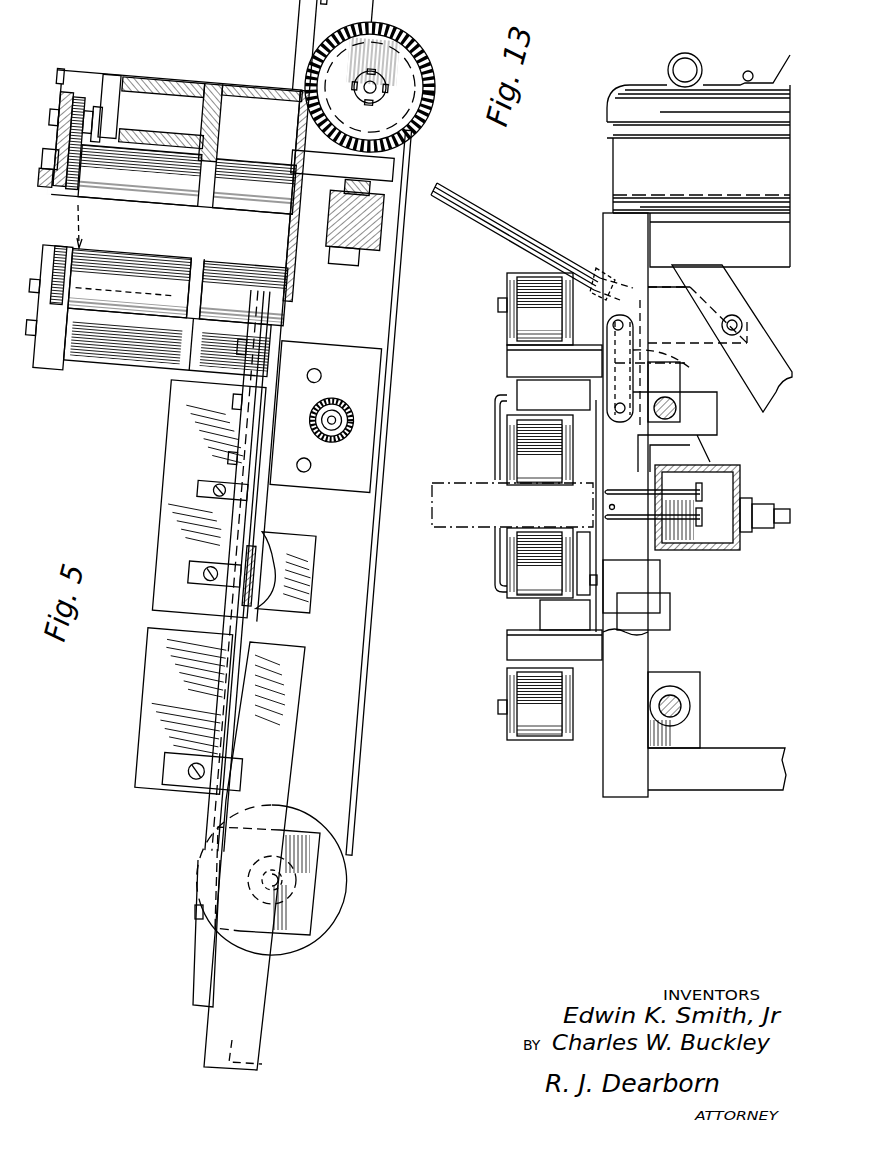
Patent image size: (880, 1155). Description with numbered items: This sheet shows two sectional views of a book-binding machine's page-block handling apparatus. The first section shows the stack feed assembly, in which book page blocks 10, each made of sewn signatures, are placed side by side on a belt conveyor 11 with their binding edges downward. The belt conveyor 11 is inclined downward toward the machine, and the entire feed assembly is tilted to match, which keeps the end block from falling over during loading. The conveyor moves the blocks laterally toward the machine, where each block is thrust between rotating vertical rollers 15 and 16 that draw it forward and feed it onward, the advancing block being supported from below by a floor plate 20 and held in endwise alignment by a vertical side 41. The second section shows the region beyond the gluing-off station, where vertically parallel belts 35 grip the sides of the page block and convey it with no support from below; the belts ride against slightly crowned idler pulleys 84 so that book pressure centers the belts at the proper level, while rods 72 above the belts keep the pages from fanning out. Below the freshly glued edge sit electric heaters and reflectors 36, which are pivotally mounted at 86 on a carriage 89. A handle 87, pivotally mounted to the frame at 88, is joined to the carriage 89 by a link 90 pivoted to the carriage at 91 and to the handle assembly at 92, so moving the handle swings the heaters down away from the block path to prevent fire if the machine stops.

In FIG. 5, the book page blocks 10 is at (77, 229).
In FIG. 13, the book page blocks 10 is at (437, 483).
In FIG. 5, the belt conveyor 11 is at (357, 746).
In FIG. 5, the vertical rollers 15 is at (232, 213).
In FIG. 5, the vertical rollers 16 is at (140, 205).
In FIG. 5, the floor plate 20 is at (322, 240).
In FIG. 5, the vertical side 41 is at (147, 697).
In FIG. 13, the vertically parallel belts 35 is at (527, 275).
In FIG. 13, the electric heaters and reflectors 36 is at (698, 550).
In FIG. 13, the rods 72 is at (494, 440).
In FIG. 13, the idler rollers or pulleys 84 is at (540, 506).
In FIG. 13, the pivotal mounting 86 is at (677, 408).
In FIG. 13, the handle 87 is at (513, 226).
In FIG. 13, the pivotal mounting to frame 88 is at (745, 323).
In FIG. 13, the carriage 89 is at (717, 438).
In FIG. 13, the link 90 is at (680, 350).
In FIG. 13, the pivotal connection to carriage 91 is at (607, 388).
In FIG. 13, the pivotal connection to handle assembly 92 is at (606, 294).